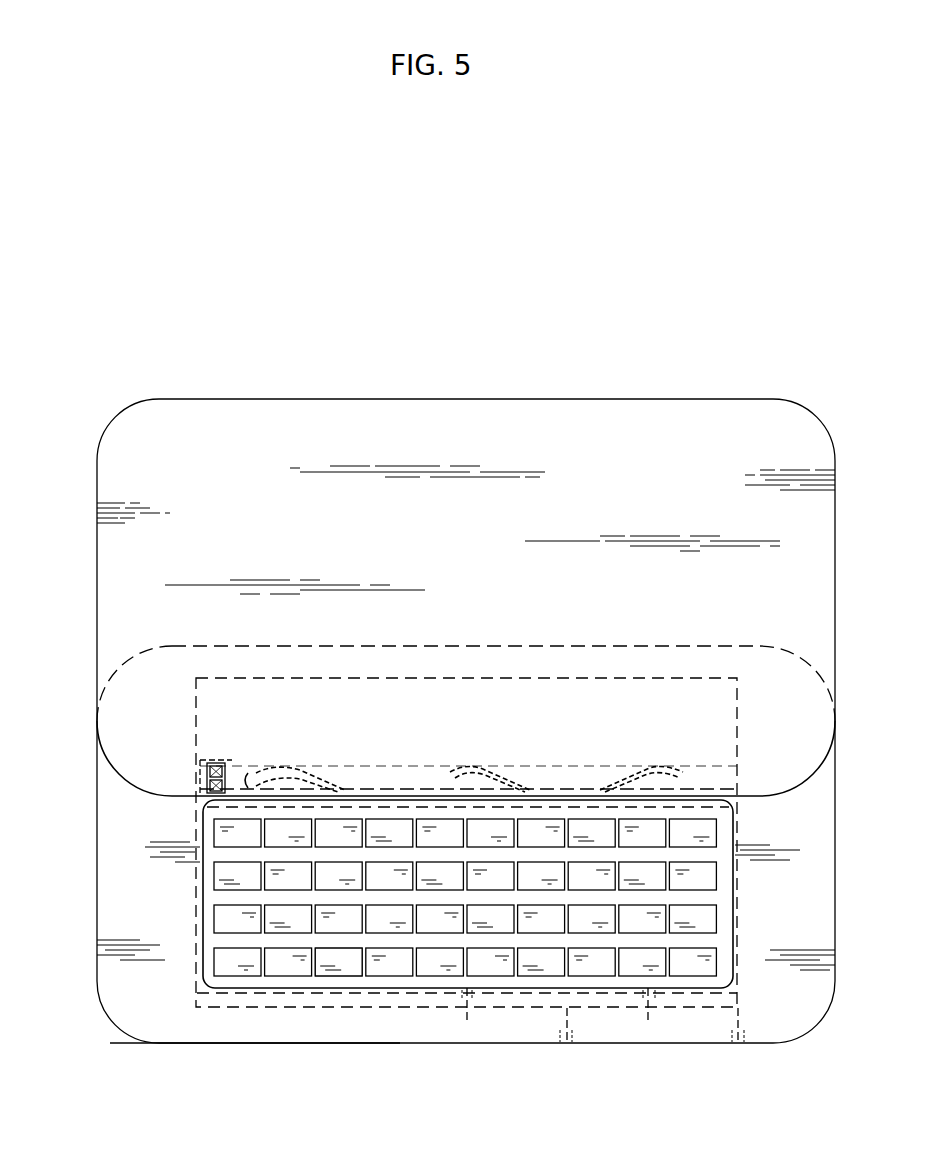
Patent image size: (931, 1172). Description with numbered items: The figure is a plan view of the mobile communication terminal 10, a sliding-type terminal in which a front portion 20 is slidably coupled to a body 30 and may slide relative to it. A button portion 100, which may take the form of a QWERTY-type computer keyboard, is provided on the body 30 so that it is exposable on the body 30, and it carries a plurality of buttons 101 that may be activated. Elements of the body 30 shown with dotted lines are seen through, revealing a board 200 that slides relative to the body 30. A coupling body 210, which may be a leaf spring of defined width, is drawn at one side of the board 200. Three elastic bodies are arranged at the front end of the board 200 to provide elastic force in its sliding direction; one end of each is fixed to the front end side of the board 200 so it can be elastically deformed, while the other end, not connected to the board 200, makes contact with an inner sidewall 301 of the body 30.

The mobile communication terminal 10 is at (184, 312).
The front portion 20 is at (545, 410).
The body 30 is at (180, 1030).
The button portion 100 is at (242, 988).
The button 101 is at (346, 970).
The board 200 is at (196, 925).
The coupling body 210 is at (213, 775).
The inner sidewall 301 is at (383, 766).